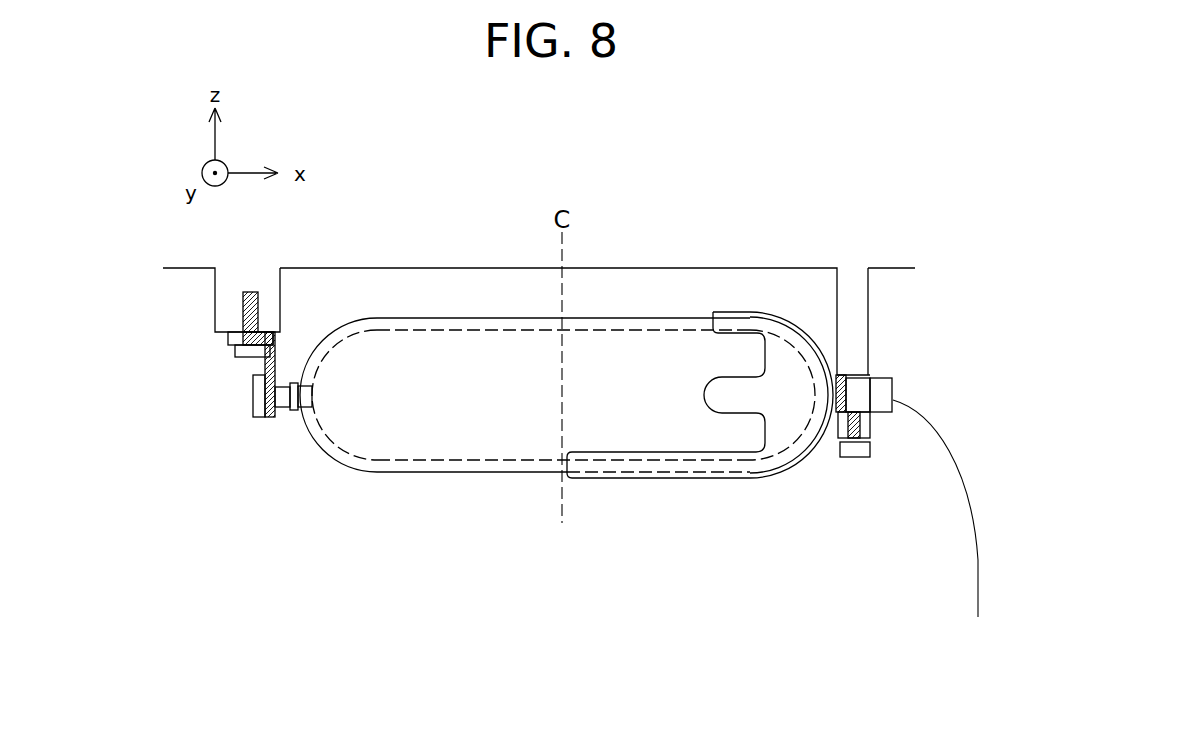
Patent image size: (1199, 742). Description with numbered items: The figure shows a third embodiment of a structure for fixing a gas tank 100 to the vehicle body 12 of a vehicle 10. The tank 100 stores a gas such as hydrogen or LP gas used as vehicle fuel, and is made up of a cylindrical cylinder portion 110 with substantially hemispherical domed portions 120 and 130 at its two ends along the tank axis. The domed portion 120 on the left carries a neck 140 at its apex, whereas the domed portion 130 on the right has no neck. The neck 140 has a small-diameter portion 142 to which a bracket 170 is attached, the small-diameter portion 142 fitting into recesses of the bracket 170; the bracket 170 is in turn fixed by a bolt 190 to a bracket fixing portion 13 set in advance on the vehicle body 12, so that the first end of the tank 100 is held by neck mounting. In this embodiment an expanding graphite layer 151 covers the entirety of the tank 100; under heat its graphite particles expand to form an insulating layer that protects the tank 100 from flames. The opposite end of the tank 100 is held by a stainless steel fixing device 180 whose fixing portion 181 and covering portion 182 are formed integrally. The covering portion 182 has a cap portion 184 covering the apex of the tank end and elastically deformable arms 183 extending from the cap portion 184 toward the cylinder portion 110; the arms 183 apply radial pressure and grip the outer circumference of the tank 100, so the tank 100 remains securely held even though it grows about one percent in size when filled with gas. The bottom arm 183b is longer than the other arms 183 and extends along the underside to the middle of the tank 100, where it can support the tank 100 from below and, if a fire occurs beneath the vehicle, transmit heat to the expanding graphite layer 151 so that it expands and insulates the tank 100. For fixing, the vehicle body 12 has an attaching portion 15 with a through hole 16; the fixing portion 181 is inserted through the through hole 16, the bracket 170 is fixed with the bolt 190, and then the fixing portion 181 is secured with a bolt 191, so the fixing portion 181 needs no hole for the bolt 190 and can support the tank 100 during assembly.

The vehicle 10 is at (882, 172).
The vehicle body 12 is at (661, 251).
The bracket fixing portion 13 is at (213, 313).
The attaching portion 15 is at (858, 363).
The through hole 16 is at (893, 390).
The tank 100 is at (556, 419).
The cylinder portion 110 is at (603, 326).
The domed portion 120 is at (365, 475).
The domed portion 130 is at (818, 338).
The neck 140 is at (251, 398).
The small-diameter portion 142 is at (290, 410).
The expanding graphite layer 151 is at (342, 332).
The bracket 170 is at (265, 365).
The fixing device 180 is at (785, 512).
The fixing portion 181 is at (944, 526).
The covering portion 182 is at (753, 483).
The arms 183 is at (730, 393).
The arm 183b is at (609, 463).
The cap portion 184 is at (783, 395).
The bolt 190 is at (233, 350).
The bolt 191 is at (843, 460).